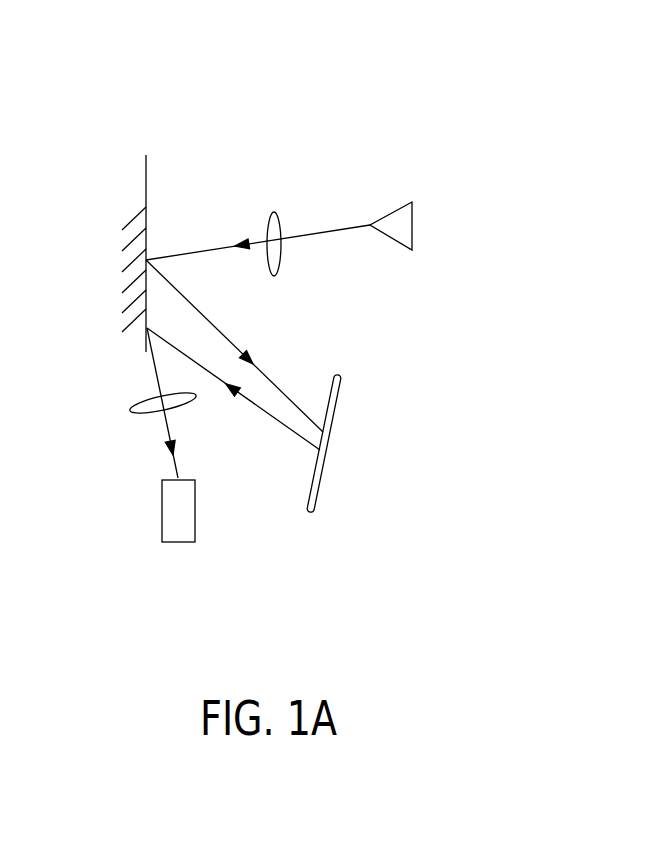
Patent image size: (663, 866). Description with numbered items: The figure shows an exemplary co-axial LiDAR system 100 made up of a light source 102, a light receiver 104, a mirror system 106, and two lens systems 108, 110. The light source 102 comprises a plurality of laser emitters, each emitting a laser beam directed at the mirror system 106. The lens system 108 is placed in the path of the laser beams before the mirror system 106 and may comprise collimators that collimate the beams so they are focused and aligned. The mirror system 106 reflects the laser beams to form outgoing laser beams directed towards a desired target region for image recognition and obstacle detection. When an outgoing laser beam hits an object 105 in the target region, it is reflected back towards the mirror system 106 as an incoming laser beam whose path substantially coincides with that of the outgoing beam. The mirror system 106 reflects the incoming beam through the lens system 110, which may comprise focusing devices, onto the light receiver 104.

The co-axial LiDAR system 100 is at (402, 90).
The light source 102 is at (487, 172).
The light receiver 104 is at (223, 605).
The object 105 is at (430, 397).
The mirror system 106 is at (153, 78).
The lens system 108 is at (288, 140).
The lens system 110 is at (72, 378).